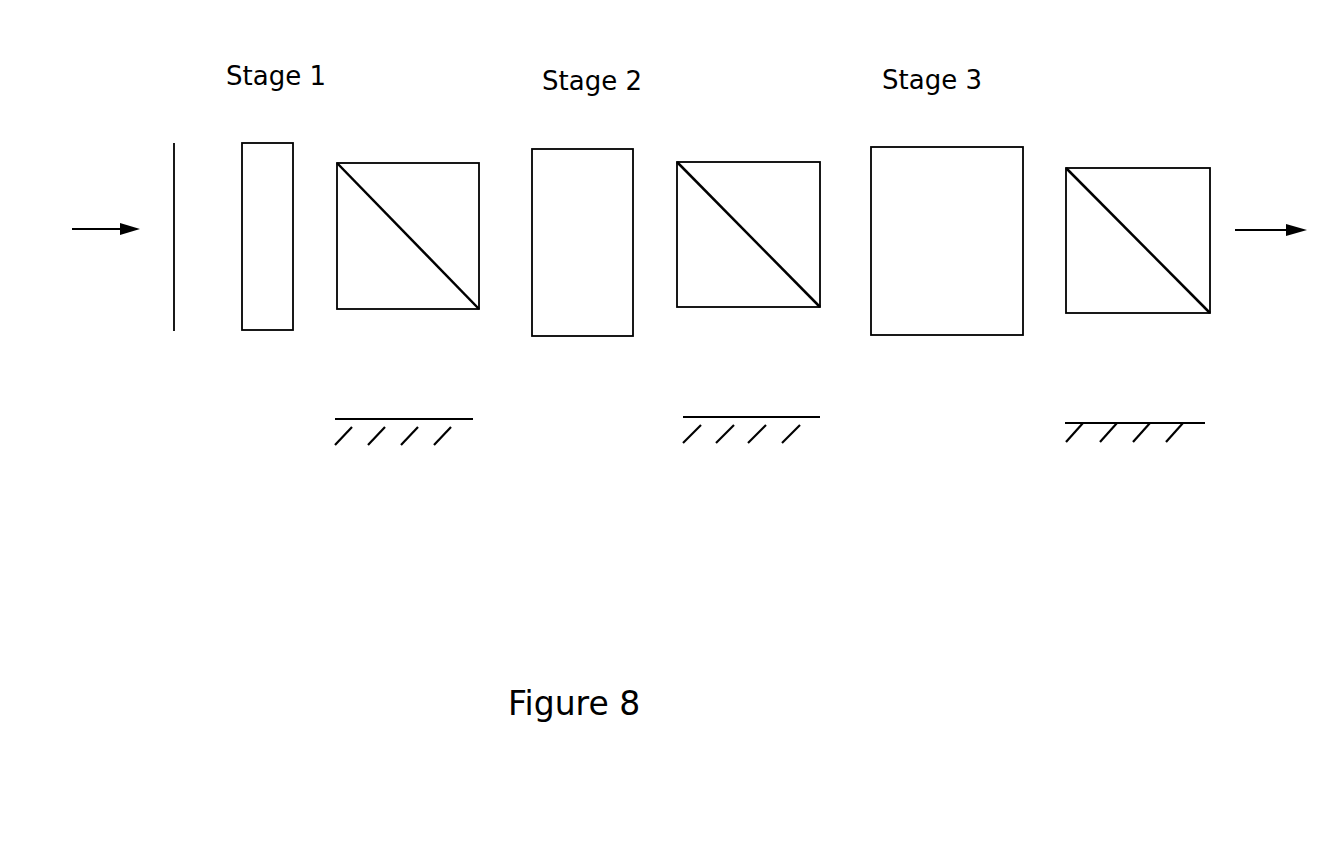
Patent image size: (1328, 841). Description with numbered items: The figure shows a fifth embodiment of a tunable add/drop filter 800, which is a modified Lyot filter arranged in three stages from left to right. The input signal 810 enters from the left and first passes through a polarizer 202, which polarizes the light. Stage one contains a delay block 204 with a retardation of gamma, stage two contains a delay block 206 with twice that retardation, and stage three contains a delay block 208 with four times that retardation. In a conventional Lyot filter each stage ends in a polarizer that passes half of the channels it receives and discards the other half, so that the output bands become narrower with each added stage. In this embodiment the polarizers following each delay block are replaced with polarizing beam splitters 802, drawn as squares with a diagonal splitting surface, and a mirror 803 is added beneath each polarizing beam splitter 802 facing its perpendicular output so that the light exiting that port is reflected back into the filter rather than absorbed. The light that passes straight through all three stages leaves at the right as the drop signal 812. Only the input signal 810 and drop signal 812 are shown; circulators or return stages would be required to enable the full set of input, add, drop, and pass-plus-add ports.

The tunable add/drop filter 800 is at (593, 582).
The input signal 810 is at (106, 208).
The drop signal 812 is at (1271, 209).
The polarizer 202 is at (168, 270).
The delay block 204 is at (267, 270).
The delay block 206 is at (582, 276).
The delay block 208 is at (947, 274).
The polarizing beam splitter 802 is at (773, 212).
The mirror 803 is at (770, 457).